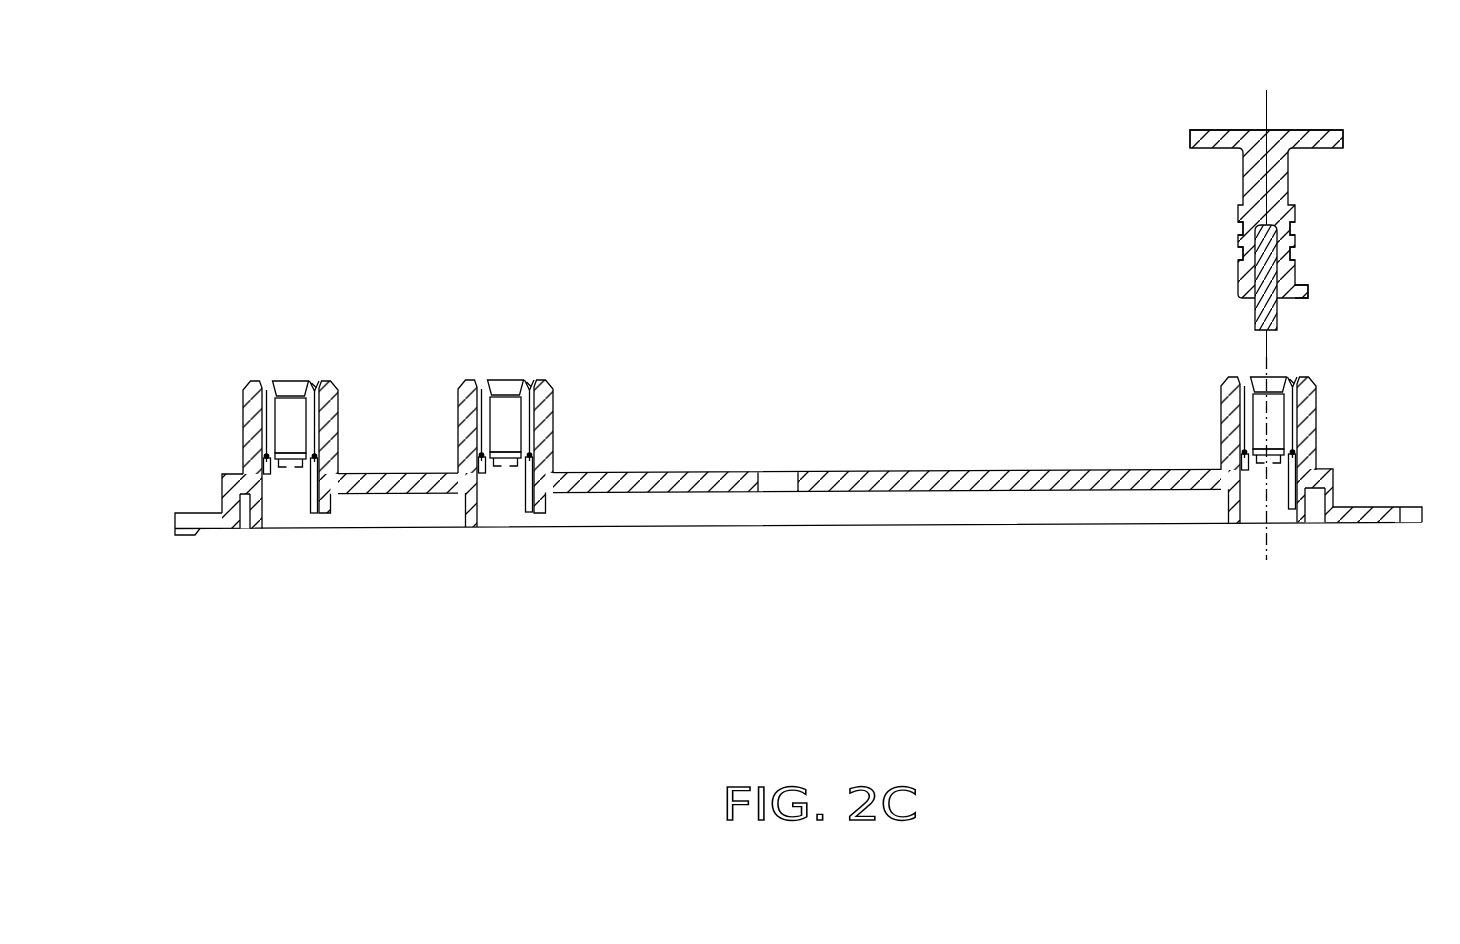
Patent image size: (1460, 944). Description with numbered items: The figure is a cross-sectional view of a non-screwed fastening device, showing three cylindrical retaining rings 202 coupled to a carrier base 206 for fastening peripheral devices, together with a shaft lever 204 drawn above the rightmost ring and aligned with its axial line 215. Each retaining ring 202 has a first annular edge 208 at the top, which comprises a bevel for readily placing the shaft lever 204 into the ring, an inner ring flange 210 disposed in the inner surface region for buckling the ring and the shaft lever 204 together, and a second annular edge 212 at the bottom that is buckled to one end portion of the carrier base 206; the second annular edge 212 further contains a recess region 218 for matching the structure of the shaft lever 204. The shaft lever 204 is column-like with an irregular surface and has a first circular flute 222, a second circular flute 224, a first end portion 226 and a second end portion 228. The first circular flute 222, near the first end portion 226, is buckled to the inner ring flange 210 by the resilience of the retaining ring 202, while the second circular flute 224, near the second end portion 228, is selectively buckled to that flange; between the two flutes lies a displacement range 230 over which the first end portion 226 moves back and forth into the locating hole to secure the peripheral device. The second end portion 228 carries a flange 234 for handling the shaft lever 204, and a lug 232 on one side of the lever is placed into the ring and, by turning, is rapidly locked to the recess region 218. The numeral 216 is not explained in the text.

The retaining ring 202 is at (228, 441).
The shaft lever 204 is at (1297, 196).
The carrier base 206 is at (768, 508).
The first annular edge 208 is at (287, 379).
The inner ring flange 210 is at (479, 455).
The second annular edge 212 is at (258, 529).
The axial line 215 is at (1266, 103).
The notch 216 is at (318, 379).
The recess region 218 is at (1300, 523).
The first circular flute 222 is at (1300, 257).
The second circular flute 224 is at (1300, 229).
The first end portion 226 is at (1278, 320).
The second end portion 228 is at (1280, 178).
The displacement range 230 is at (1233, 222).
The lug 232 is at (1309, 291).
The flange 234 is at (1343, 136).